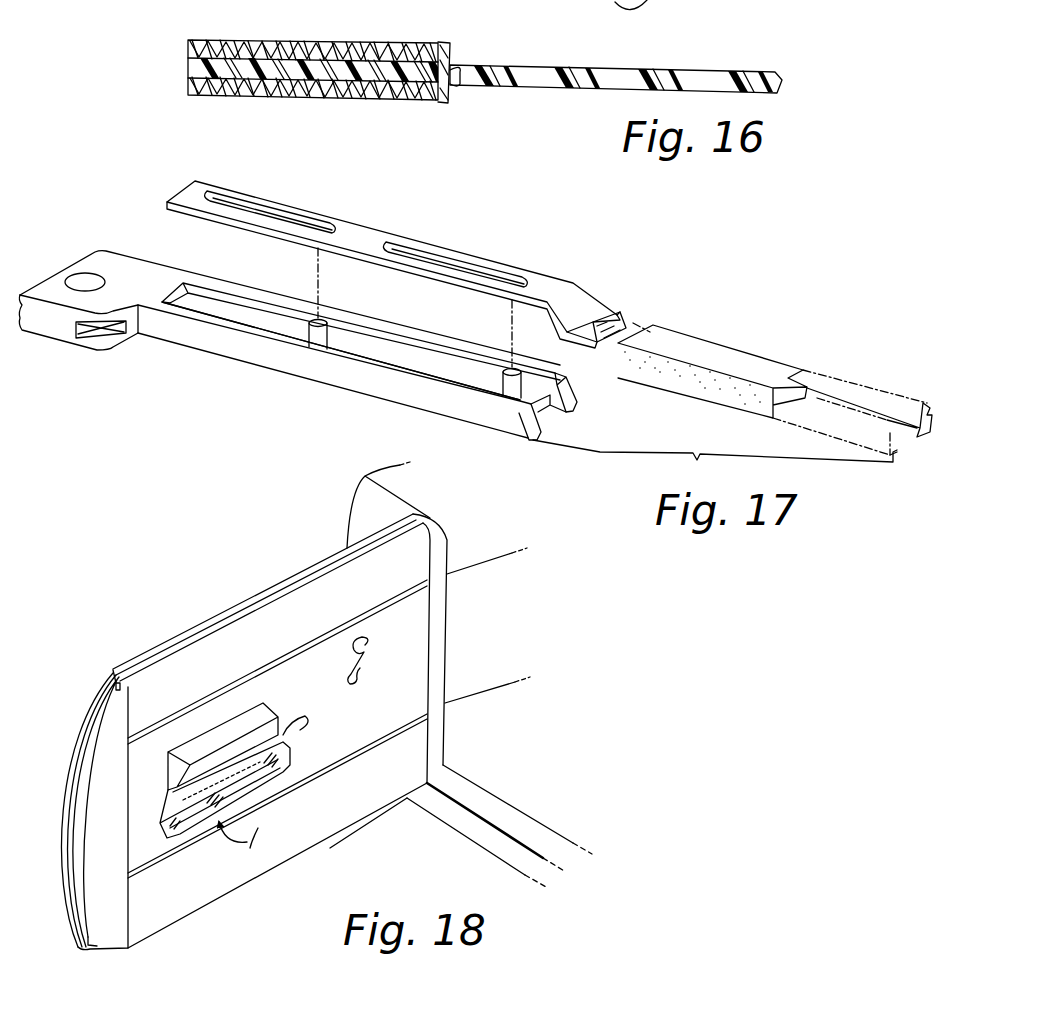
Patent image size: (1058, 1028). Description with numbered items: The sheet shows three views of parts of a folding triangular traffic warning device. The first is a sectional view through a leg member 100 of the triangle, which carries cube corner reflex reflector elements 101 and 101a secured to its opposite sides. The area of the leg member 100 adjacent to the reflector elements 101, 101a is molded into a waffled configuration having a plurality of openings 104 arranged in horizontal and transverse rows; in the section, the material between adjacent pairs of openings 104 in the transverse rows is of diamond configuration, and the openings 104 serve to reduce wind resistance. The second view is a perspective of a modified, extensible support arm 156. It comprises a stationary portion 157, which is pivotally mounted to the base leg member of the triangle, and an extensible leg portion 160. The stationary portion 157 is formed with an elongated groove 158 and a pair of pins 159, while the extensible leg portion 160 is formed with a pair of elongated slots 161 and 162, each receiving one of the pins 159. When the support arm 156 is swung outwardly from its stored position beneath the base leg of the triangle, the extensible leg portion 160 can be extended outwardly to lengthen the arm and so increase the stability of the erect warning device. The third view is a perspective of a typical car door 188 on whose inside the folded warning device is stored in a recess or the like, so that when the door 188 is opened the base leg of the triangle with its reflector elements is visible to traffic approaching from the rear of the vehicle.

In FIG. 16, the leg member 100 is at (717, 62).
In FIG. 16, the cube corner reflex reflector element 101 is at (285, 42).
In FIG. 16, the cube corner reflex reflector element 101a is at (325, 97).
In FIG. 16, the openings 104 is at (622, 70).
In FIG. 17, the support arm 156 is at (298, 392).
In FIG. 17, the stationary portion 157 is at (217, 342).
In FIG. 17, the elongated groove 158 is at (410, 363).
In FIG. 17, the pins 159 is at (323, 318).
In FIG. 17, the extensible leg portion 160 is at (365, 237).
In FIG. 17, the elongated slot 161 is at (273, 215).
In FIG. 17, the elongated slot 162 is at (470, 267).
In FIG. 18, the car door 188 is at (241, 594).